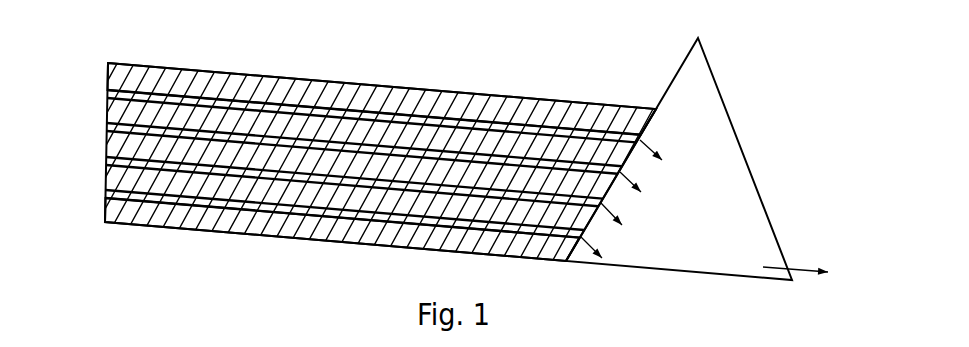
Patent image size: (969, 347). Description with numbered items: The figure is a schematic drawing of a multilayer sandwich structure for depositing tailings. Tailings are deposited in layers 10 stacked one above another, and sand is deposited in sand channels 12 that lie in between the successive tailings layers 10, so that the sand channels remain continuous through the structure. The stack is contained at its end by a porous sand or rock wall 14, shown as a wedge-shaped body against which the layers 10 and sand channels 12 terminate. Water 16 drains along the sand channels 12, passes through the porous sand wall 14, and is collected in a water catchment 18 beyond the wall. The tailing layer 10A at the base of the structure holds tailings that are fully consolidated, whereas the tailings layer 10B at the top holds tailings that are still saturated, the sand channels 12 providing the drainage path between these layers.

The tailings layers 10 is at (350, 162).
The tailing layer at the base 10A is at (200, 218).
The tailings layer at the top 10B is at (423, 105).
The sand channels 12 is at (108, 94).
The porous sand or rock wall 14 is at (697, 90).
The water 16 is at (683, 217).
The water catchment 18 is at (817, 272).